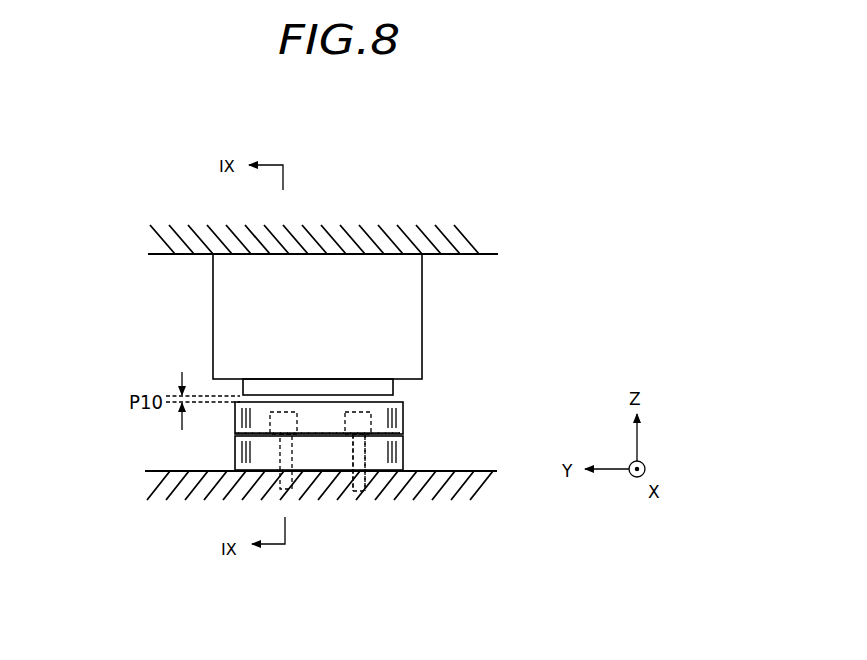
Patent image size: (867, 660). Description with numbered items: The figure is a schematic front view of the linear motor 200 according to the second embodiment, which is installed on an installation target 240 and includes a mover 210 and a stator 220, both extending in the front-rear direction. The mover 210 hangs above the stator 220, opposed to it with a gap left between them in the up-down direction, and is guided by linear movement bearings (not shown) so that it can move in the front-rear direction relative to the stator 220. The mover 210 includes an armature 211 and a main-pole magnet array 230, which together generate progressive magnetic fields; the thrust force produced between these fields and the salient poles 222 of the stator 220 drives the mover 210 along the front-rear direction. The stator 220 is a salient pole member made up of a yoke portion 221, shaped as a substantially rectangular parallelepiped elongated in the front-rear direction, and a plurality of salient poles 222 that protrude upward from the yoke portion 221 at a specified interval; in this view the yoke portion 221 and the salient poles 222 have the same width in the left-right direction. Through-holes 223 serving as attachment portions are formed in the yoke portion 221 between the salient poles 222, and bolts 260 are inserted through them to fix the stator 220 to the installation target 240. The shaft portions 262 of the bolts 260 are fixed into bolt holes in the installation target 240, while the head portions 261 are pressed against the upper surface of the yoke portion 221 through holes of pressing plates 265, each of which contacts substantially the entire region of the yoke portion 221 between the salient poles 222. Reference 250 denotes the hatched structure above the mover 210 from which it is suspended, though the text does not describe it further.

The linear motor 200 is at (519, 261).
The mover 210 is at (382, 324).
The armature 211 is at (375, 309).
The stator 220 is at (384, 432).
The yoke portion 221 is at (403, 455).
The salient poles 222 is at (403, 419).
The through-holes 223 is at (352, 482).
The main-pole magnet array 230 is at (366, 388).
The installation target 240 is at (188, 470).
The ceiling support 250 is at (440, 225).
The bolts 260 is at (349, 396).
The head portions 261 is at (373, 470).
The shaft portions 262 is at (355, 486).
The pressing plates 265 is at (238, 433).